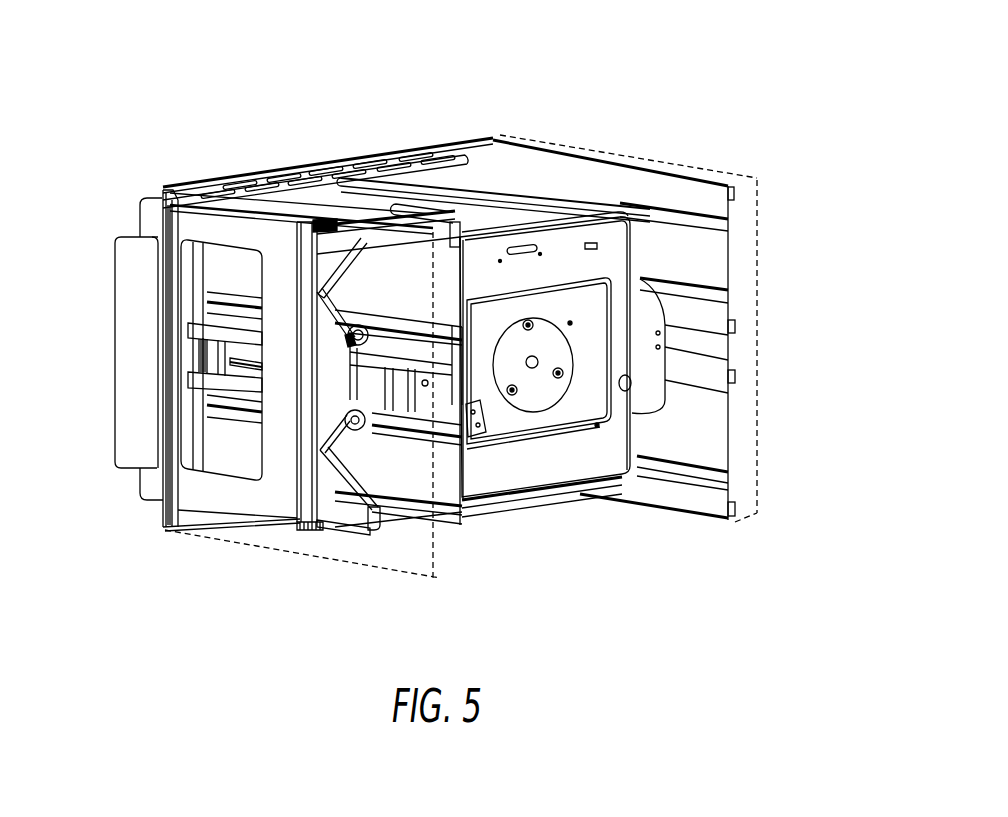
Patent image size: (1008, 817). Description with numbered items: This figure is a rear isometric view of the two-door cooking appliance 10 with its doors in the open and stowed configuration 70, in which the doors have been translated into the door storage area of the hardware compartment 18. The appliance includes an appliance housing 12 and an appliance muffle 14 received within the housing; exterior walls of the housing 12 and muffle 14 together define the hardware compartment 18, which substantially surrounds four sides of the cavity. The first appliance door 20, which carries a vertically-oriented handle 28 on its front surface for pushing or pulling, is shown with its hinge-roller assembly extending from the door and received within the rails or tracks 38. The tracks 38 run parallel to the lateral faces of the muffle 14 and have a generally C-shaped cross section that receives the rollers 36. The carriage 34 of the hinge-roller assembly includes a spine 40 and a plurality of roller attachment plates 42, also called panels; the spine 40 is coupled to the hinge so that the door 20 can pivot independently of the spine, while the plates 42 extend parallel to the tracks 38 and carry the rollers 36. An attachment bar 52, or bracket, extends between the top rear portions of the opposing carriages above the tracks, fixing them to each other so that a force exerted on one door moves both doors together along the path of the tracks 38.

The two-door cooking appliance 10 is at (535, 88).
The appliance housing 12 is at (165, 510).
The appliance muffle 14 is at (533, 475).
The hardware compartment 18 is at (258, 173).
The first appliance door 20 is at (223, 493).
The handle 28 is at (118, 428).
The carriage 34 is at (325, 413).
The rollers 36 is at (373, 535).
The tracks 38 is at (430, 243).
The spine 40 is at (307, 492).
The roller attachment plates 42 is at (348, 518).
The attachment bar 52 is at (607, 163).
The open and stowed configuration 70 is at (606, 107).